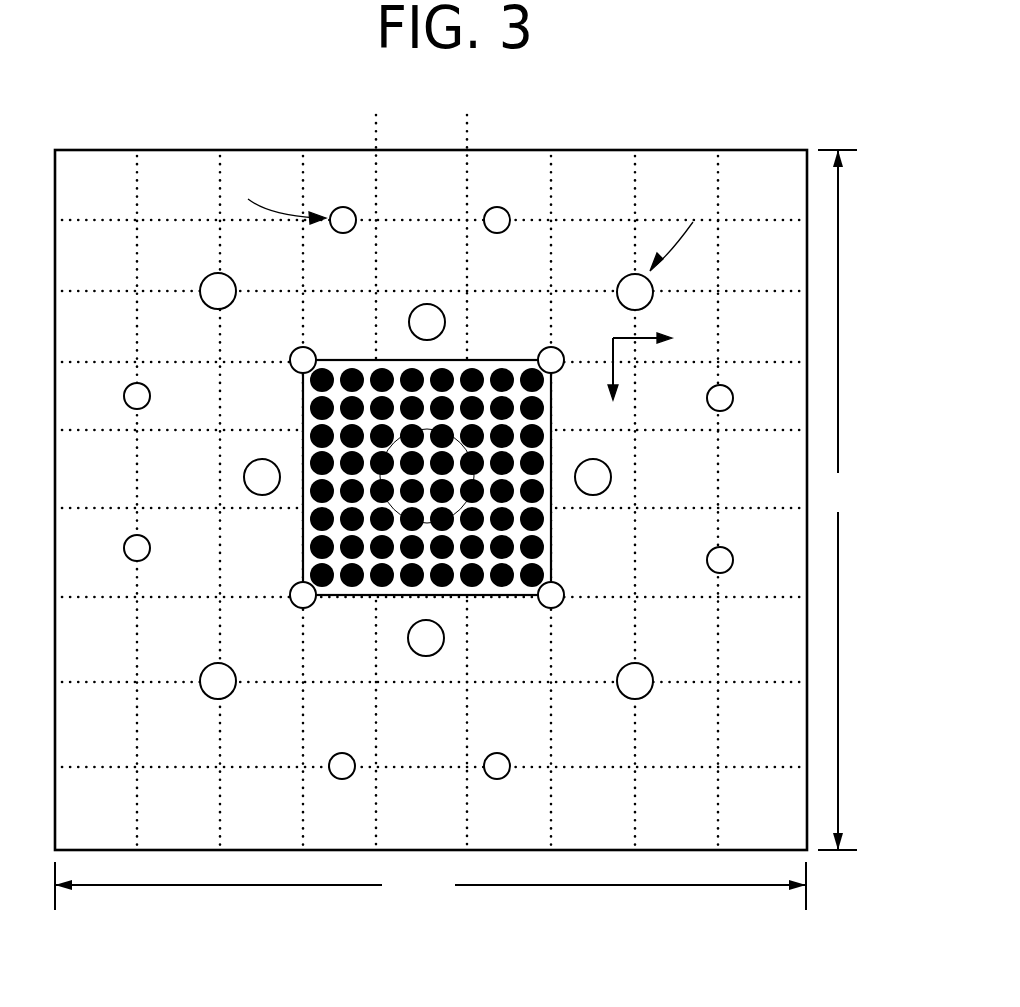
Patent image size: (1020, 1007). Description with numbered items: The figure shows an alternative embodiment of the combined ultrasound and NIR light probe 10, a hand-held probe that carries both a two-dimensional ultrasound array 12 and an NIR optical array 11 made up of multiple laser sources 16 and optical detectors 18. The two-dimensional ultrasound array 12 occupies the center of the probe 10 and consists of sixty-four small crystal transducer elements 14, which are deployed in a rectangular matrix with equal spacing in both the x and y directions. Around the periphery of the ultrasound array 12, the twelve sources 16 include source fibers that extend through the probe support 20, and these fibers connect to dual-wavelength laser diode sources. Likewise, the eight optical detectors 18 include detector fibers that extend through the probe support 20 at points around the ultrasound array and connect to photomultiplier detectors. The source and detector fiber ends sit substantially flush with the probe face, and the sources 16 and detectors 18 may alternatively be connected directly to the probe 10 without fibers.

The combined ultrasound and NIR light probe 10 is at (766, 998).
The NIR optical array 11 is at (694, 722).
The 2-D ultrasound array 12 is at (479, 357).
The crystal transducer elements 14 is at (535, 592).
The laser sources 16 is at (356, 216).
The optical detectors 18 is at (653, 287).
The probe support 20 is at (743, 150).